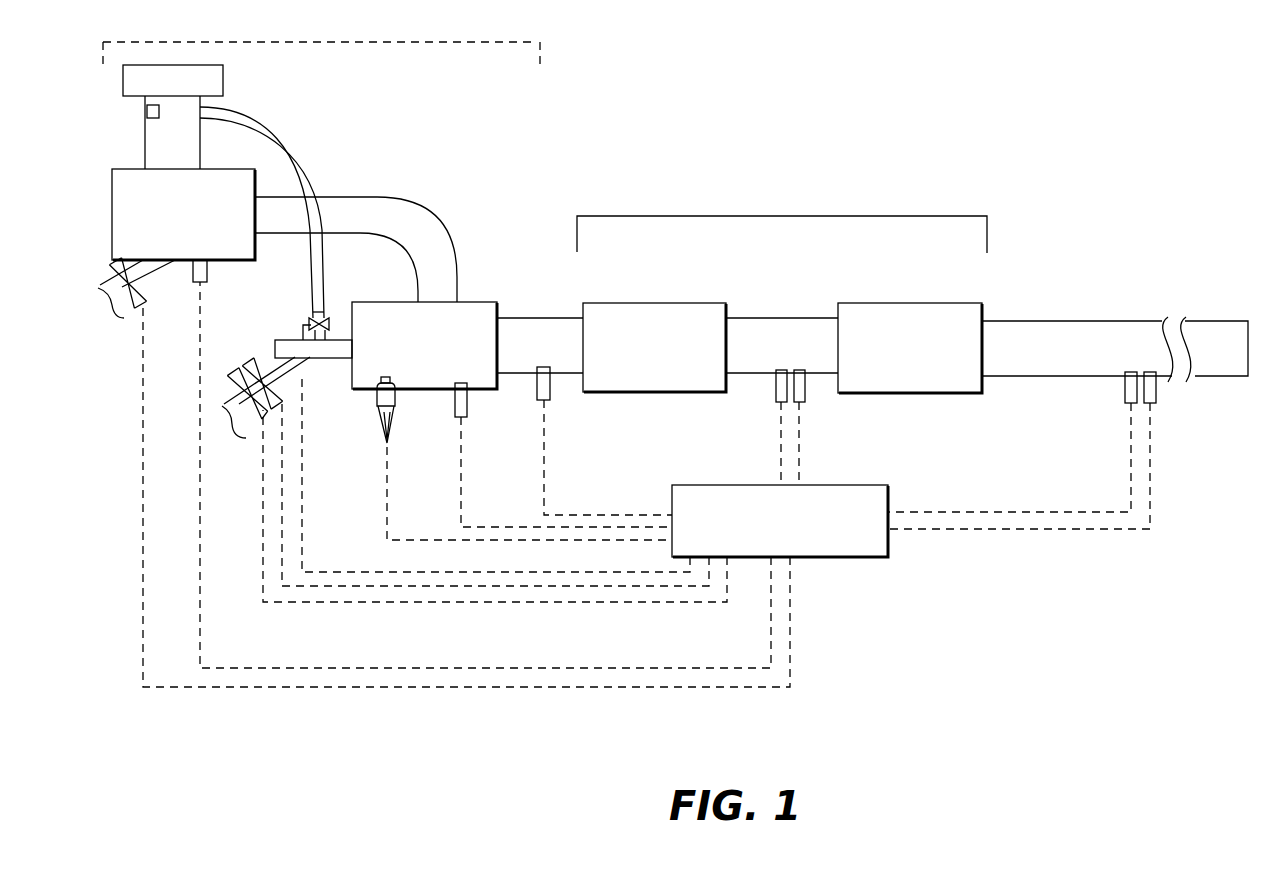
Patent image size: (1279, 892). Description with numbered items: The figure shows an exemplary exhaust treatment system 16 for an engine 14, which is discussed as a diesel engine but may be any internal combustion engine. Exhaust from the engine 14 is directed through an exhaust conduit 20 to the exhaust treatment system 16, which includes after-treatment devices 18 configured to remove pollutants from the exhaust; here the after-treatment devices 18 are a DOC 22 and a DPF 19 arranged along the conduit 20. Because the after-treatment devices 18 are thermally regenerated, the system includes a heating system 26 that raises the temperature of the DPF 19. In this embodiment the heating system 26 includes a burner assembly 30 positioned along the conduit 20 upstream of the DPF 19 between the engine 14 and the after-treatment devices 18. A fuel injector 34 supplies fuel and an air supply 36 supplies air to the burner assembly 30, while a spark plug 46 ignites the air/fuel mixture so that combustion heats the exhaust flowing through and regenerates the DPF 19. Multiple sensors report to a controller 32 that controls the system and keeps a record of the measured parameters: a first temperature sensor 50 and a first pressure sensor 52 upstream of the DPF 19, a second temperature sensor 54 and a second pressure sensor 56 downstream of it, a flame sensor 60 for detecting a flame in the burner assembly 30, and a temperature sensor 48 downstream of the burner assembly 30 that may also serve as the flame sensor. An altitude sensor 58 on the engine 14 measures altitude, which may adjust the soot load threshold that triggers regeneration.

The engine 14 is at (128, 168).
The exhaust treatment system 16 is at (722, 156).
The after-treatment devices 18 is at (790, 216).
The DPF 19 is at (928, 303).
The exhaust conduit 20 is at (410, 197).
The DOC 22 is at (655, 303).
The heating system 26 is at (518, 43).
The burner assembly 30 is at (478, 302).
The controller 32 is at (688, 485).
The fuel injector 34 is at (287, 340).
The air supply 36 is at (330, 320).
The spark plug 46 is at (377, 398).
The temperature sensor 48 is at (537, 398).
The first temperature sensor 50 is at (776, 398).
The first pressure sensor 52 is at (805, 398).
The second temperature sensor 54 is at (1125, 400).
The second pressure sensor 56 is at (1156, 400).
The altitude sensor 58 is at (147, 111).
The flame sensor 60 is at (454, 403).